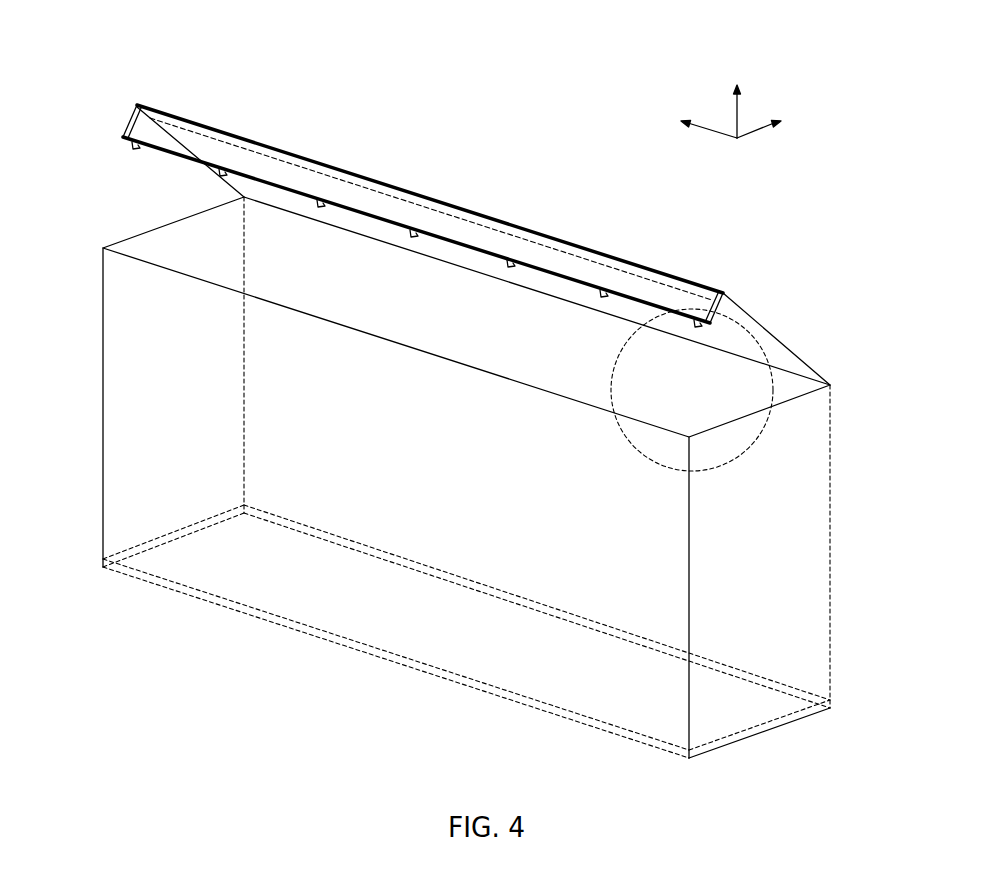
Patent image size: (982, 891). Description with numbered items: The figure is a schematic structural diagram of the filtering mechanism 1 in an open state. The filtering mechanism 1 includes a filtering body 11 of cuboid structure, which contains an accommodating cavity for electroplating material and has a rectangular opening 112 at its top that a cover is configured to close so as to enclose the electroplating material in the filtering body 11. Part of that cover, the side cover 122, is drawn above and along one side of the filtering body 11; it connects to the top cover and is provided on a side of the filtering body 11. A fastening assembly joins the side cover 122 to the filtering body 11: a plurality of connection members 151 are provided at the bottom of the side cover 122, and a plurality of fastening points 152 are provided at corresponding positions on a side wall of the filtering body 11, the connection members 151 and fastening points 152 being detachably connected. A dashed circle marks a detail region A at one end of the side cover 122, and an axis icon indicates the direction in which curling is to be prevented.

The filtering mechanism 1 is at (498, 37).
The filtering body 11 is at (385, 520).
The opening 112 is at (275, 273).
The side cover 122 is at (307, 180).
The connection member 151 is at (163, 142).
The fastening point 152 is at (113, 283).
The detail region A is at (758, 333).